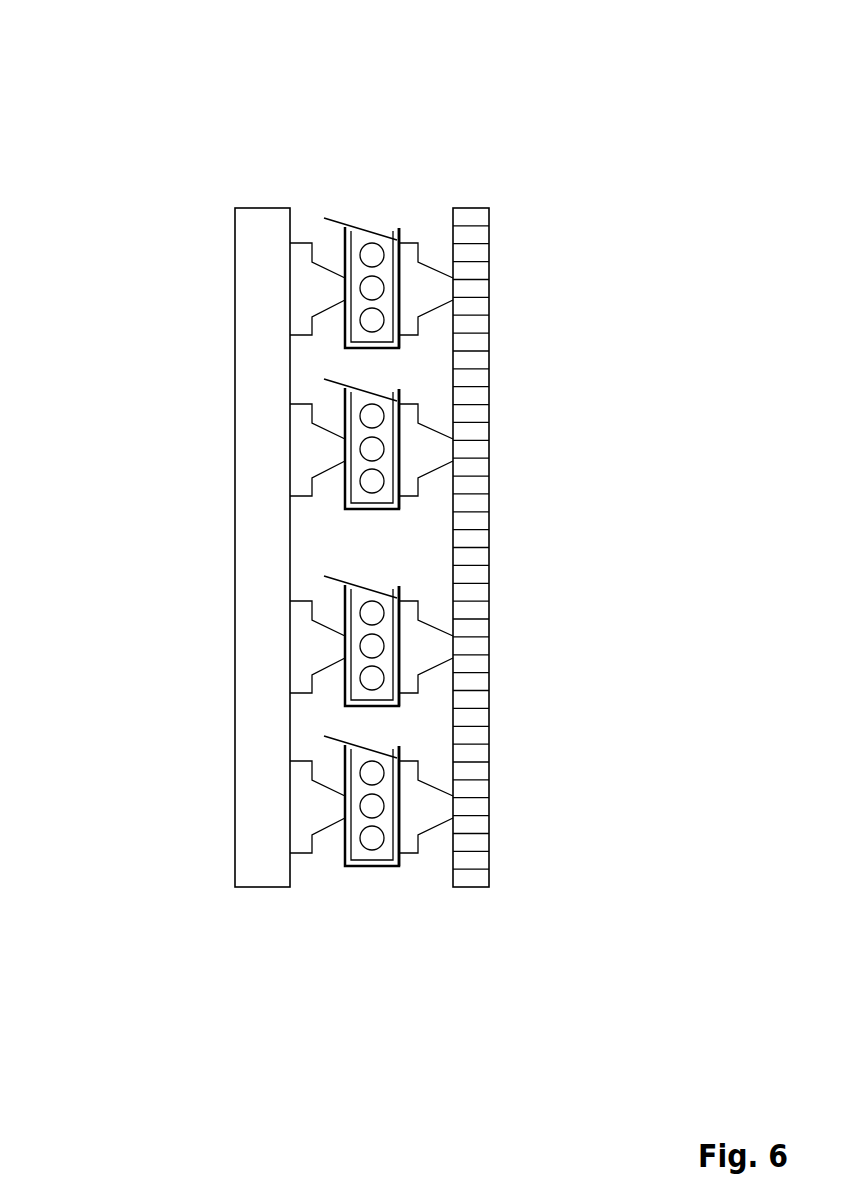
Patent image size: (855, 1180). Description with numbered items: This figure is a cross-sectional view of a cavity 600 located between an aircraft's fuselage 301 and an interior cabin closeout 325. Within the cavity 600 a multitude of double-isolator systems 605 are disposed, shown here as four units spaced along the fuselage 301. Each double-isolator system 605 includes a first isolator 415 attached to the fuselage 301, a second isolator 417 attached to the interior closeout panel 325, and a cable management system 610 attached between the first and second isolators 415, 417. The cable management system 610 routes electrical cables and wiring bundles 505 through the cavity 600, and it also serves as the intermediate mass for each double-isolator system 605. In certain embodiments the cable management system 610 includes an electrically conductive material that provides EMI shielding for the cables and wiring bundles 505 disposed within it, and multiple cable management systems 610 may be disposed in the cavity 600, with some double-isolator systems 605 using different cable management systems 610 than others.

The cavity 600 is at (173, 73).
The fuselage 301 is at (227, 328).
The interior cabin closeout 325 is at (470, 888).
The first isolator 415 is at (303, 243).
The second isolator 417 is at (408, 243).
The cables and wiring bundles 505 is at (376, 248).
The double-isolator system 605 is at (384, 205).
The cable management system 610 is at (403, 212).